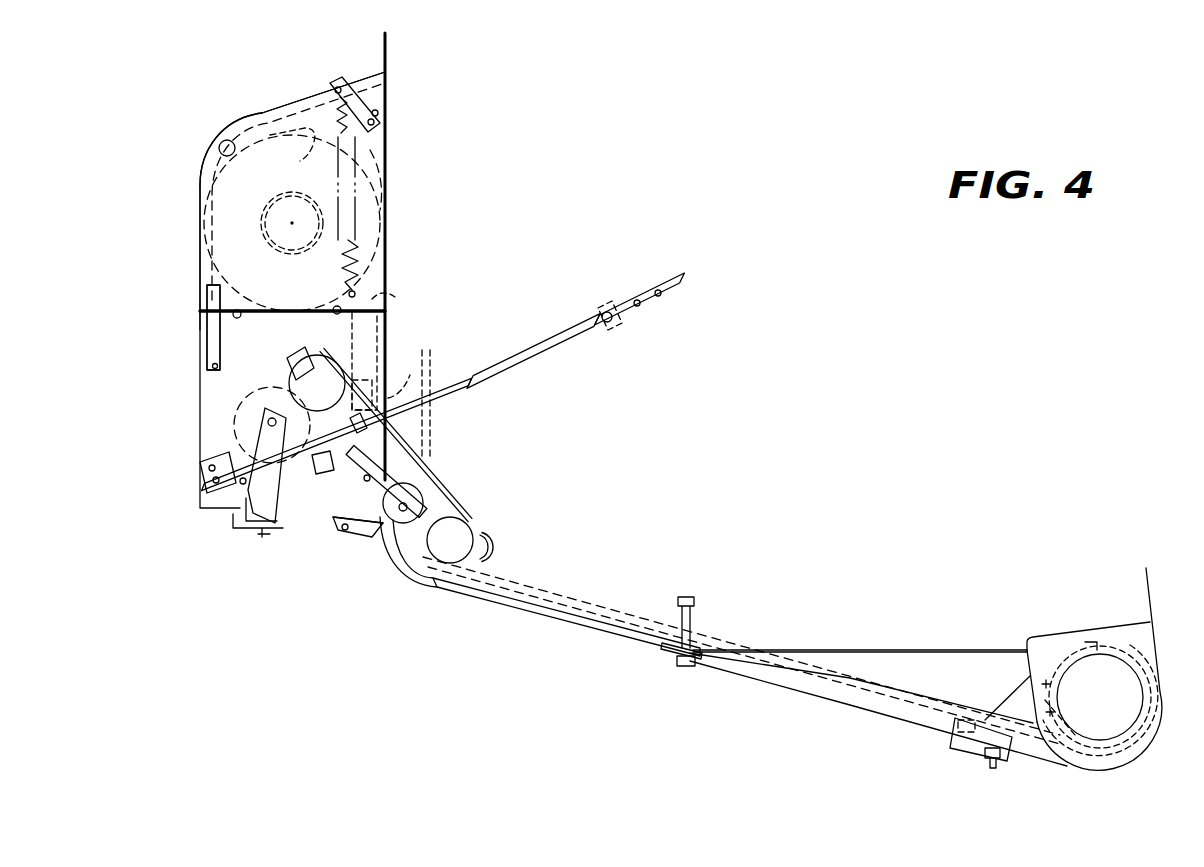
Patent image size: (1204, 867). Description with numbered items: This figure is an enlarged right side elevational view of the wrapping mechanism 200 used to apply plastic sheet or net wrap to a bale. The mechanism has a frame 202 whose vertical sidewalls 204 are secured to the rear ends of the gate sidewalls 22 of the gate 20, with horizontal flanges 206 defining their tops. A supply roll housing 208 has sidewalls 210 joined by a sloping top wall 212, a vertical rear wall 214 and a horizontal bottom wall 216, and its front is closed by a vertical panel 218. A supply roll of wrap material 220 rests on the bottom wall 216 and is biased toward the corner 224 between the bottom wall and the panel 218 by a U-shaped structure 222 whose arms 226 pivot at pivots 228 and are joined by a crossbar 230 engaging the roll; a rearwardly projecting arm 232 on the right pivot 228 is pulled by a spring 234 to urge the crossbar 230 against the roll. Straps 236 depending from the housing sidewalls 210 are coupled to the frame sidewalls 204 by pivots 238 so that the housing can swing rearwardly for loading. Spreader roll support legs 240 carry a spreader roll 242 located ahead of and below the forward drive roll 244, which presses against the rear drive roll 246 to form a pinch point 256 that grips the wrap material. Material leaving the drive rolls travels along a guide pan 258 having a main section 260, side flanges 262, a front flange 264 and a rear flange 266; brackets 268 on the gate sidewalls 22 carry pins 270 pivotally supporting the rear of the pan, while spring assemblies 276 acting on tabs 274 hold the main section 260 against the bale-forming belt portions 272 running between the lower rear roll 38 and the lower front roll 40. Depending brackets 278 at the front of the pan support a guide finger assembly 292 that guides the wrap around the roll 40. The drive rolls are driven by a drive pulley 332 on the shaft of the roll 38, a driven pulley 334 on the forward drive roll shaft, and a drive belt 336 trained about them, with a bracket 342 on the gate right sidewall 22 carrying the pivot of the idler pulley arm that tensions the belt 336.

The gate 20 is at (381, 43).
The gate sidewalls 22 is at (562, 262).
The lower rear roll 38 is at (483, 545).
The lower front roll 40 is at (1082, 638).
The wrapping mechanism 200 is at (289, 601).
The frame 202 is at (199, 413).
The vertical sidewalls 204 is at (277, 312).
The horizontal flanges 206 is at (384, 324).
The wrap material supply roll housing 208 is at (199, 224).
The housing sidewalls 210 is at (225, 249).
The top wall 212 is at (308, 97).
The rear wall 214 is at (200, 190).
The bottom wall 216 is at (263, 311).
The vertical panel 218 is at (387, 192).
The supply roll of wrap material 220 is at (372, 172).
The U-shaped structure 222 is at (249, 117).
The corner 224 is at (395, 297).
The arms 226 is at (314, 150).
The pivots 228 is at (380, 121).
The crossbar 230 is at (215, 150).
The rearwardly projecting arm 232 is at (352, 108).
The spring 234 is at (362, 257).
The straps 236 is at (205, 336).
The pivots 238 is at (212, 366).
The spreader roll support legs 240 is at (400, 342).
The wrap material spreader roll 242 is at (391, 405).
The forward wrap material drive roll 244 is at (292, 362).
The rear wrap material drive roll 246 is at (235, 430).
The pinch point 256 is at (256, 421).
The wrap material guide pan 258 is at (541, 621).
The main section 260 is at (600, 612).
The side flanges 262 is at (360, 556).
The front flange 264 is at (978, 746).
The rear flange 266 is at (337, 516).
The brackets 268 is at (378, 516).
The pins 270 is at (343, 537).
The bale-forming belt portions 272 is at (893, 685).
The tabs 274 is at (695, 660).
The spring assemblies 276 is at (706, 617).
The depending brackets 278 is at (960, 736).
The guide finger assembly 292 is at (1082, 752).
The drive pulley 332 is at (468, 528).
The driven pulley 334 is at (343, 352).
The drive belt 336 is at (403, 428).
The bracket 342 is at (395, 458).